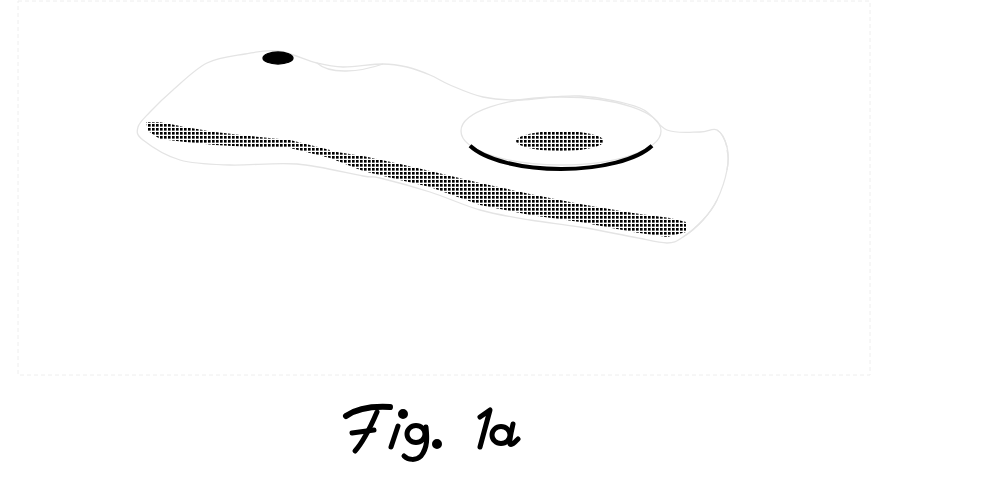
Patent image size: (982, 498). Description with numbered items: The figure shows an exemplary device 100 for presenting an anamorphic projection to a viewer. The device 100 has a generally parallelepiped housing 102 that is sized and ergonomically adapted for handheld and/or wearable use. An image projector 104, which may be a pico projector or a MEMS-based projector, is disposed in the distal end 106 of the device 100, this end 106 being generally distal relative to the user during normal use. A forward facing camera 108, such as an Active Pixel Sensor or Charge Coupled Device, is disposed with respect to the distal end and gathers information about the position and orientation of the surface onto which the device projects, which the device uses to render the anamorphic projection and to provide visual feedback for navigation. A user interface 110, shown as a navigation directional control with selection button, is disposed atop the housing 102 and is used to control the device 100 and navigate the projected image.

The device 100 is at (463, 367).
The housing 102 is at (395, 63).
The image projector 104 is at (725, 167).
The distal end 106 is at (707, 230).
The forward facing camera 108 is at (725, 147).
The user interface 110 is at (558, 122).